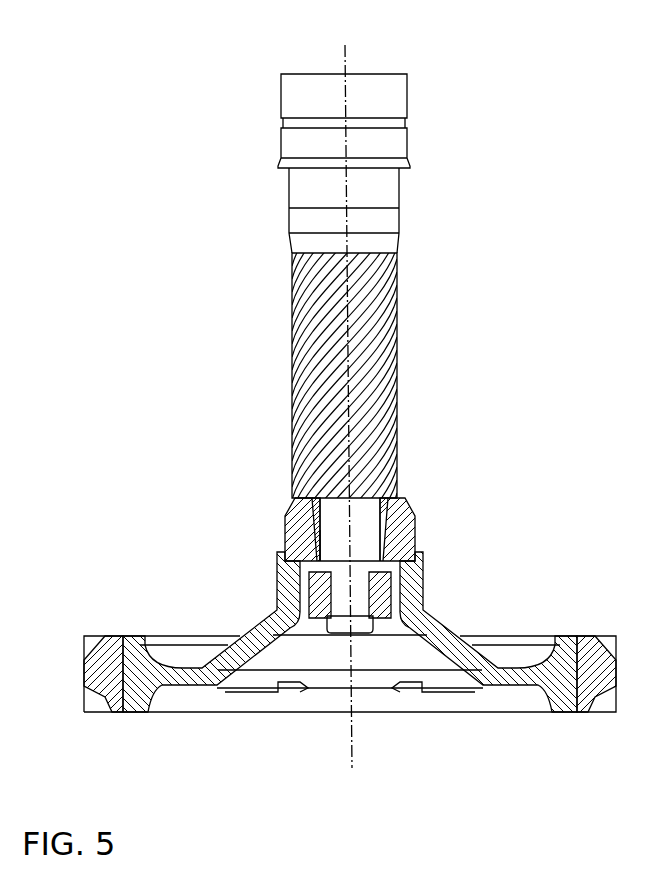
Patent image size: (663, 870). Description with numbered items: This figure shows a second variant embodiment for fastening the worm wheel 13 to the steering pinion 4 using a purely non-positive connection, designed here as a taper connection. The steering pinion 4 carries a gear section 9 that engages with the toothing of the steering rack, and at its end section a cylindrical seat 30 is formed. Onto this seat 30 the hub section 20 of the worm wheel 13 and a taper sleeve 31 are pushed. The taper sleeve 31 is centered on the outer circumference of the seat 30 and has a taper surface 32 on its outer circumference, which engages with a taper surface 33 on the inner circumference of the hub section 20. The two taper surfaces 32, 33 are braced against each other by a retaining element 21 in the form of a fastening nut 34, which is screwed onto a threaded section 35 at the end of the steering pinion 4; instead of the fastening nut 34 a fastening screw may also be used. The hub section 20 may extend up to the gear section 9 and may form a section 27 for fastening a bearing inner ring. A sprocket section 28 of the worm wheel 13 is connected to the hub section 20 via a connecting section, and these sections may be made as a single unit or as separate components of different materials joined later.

The steering pinion 4 is at (377, 358).
The gear section 9 is at (395, 382).
The worm wheel 13 is at (565, 690).
The hub section 20 is at (293, 515).
The retaining element 21 is at (318, 613).
The section for fastening a bearing inner ring 27 is at (414, 533).
The sprocket section 28 is at (108, 690).
The cylindrical seat 30 is at (362, 526).
The taper sleeve 31 is at (388, 555).
The taper surface 32 is at (320, 542).
The taper surface 33 is at (298, 519).
The fastening nut 34 is at (378, 593).
The threaded section 35 is at (363, 626).